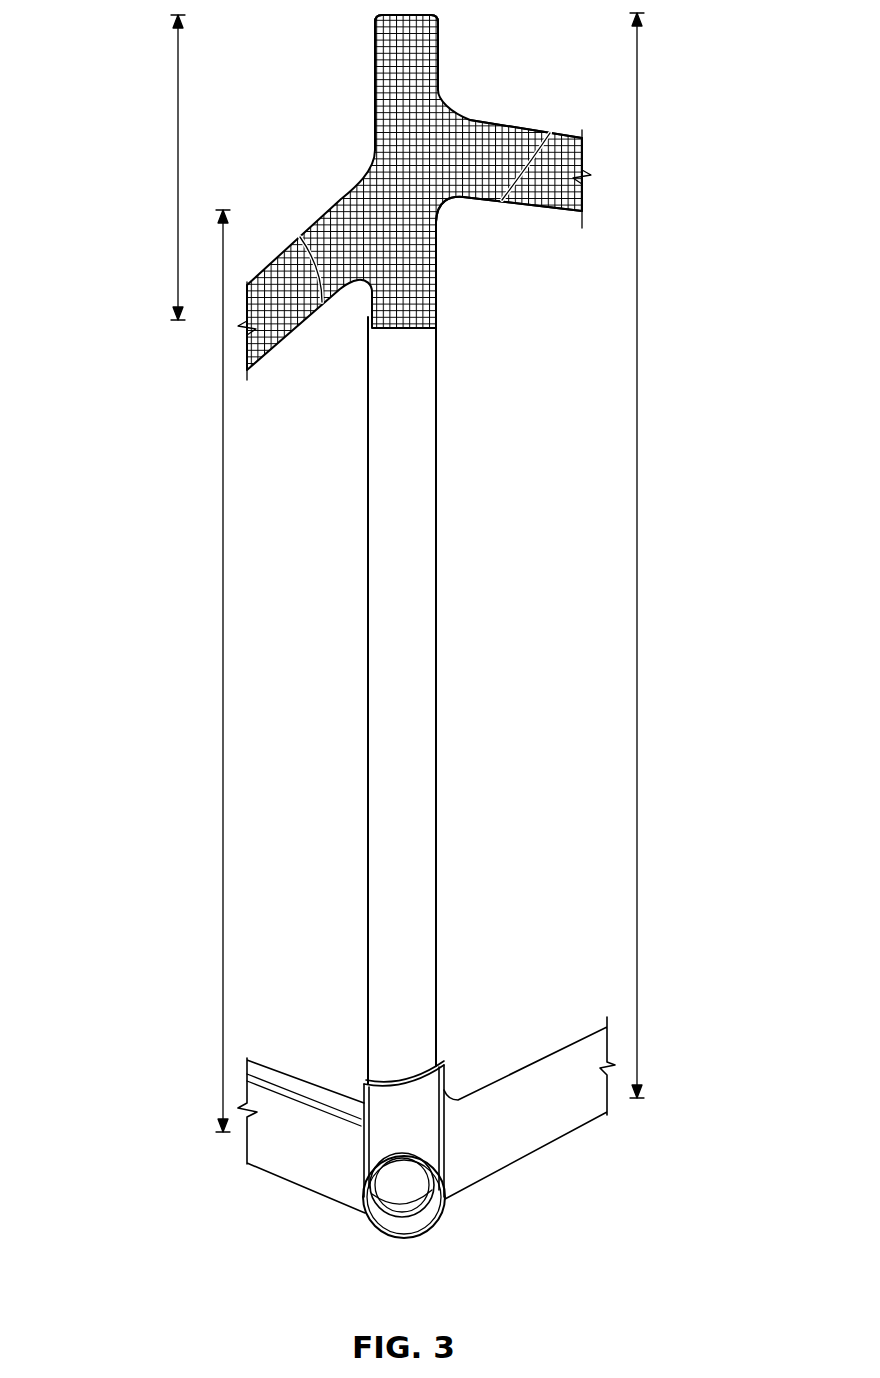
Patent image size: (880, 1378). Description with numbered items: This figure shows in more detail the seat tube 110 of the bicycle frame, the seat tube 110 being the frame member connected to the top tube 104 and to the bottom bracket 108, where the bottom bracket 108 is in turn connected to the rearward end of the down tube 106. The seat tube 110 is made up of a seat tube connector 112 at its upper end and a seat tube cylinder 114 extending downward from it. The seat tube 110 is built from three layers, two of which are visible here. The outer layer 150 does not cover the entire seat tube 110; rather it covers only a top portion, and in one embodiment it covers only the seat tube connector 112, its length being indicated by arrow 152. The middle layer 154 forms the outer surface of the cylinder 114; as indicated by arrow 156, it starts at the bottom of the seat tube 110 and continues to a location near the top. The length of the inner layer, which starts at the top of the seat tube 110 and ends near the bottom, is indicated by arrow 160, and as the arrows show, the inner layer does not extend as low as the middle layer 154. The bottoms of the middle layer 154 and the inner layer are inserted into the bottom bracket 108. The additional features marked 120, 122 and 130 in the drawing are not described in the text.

The top tube 104 is at (571, 138).
The down tube 106 is at (515, 1148).
The bottom bracket 108 is at (445, 1213).
The seat tube 110 is at (431, 328).
The seat tube connector 112 is at (436, 255).
The seat tube cylinder 114 is at (436, 500).
The plate 120 is at (330, 1188).
The weld 122 is at (308, 1097).
The tube member 130 is at (278, 265).
The outer layer 150 is at (376, 50).
The arrow 152 is at (176, 150).
The middle layer 154 is at (425, 410).
The arrow 156 is at (221, 495).
The arrow 160 is at (637, 490).